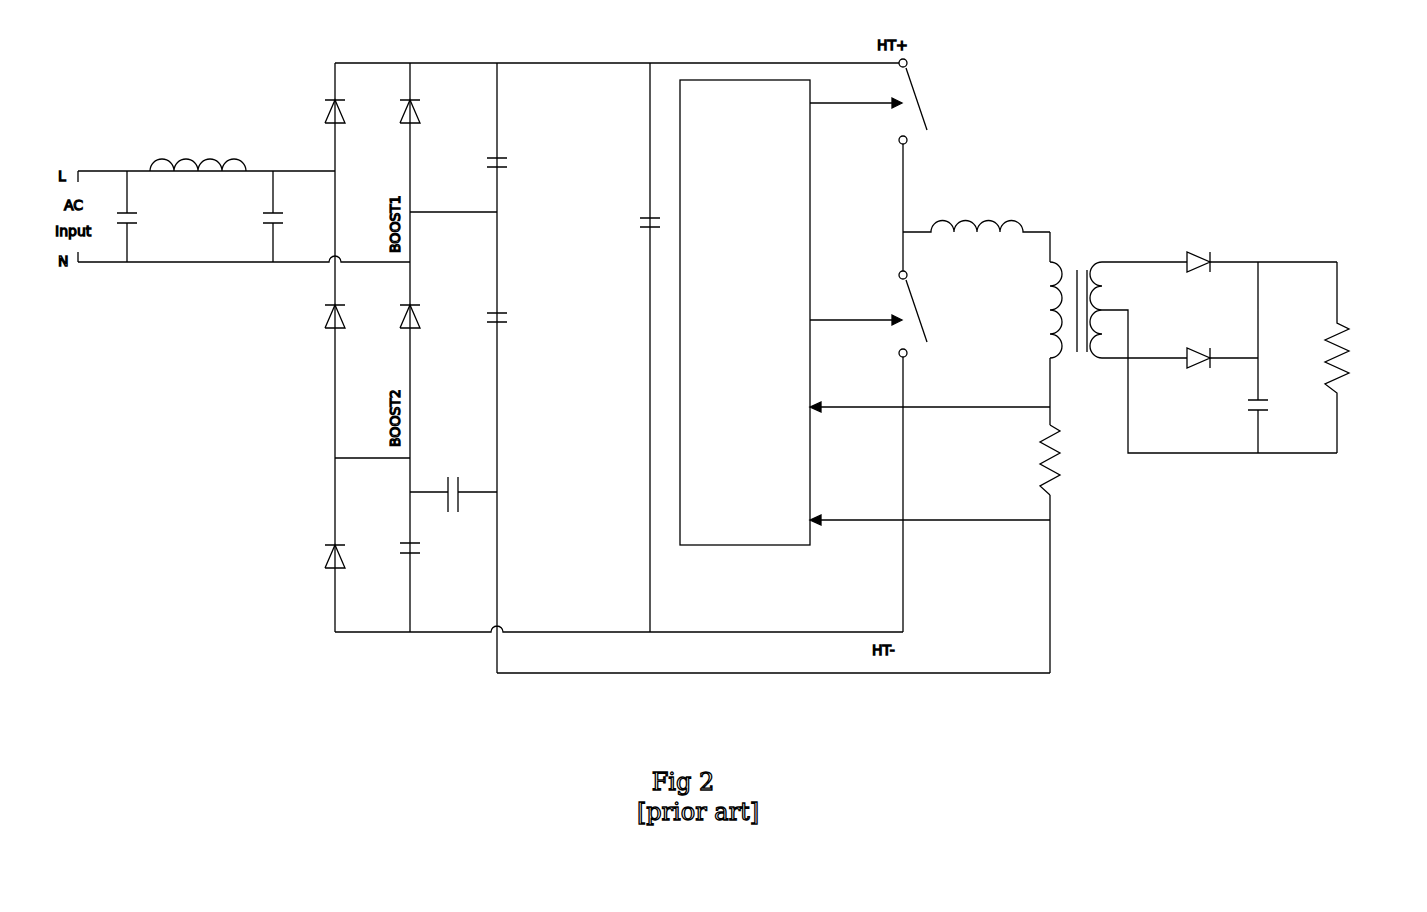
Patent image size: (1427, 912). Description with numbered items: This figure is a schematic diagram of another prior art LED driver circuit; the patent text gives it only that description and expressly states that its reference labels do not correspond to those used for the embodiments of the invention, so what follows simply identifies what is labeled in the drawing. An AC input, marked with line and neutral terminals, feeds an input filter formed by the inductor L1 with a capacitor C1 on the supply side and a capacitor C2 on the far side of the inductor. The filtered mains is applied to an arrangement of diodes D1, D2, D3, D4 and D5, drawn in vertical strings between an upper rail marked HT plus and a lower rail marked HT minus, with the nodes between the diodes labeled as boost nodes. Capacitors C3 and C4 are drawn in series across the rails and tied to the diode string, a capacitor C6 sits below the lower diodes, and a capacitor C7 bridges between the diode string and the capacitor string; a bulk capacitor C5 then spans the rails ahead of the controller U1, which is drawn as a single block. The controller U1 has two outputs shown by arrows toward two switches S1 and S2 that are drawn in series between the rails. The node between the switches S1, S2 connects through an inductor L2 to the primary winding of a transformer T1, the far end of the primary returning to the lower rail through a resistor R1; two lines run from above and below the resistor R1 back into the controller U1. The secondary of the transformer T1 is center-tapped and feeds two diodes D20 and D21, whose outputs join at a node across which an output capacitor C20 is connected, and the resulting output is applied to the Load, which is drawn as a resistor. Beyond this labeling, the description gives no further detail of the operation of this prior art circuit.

The input filter inductor L1 is at (198, 150).
The input filter capacitor C1 is at (142, 216).
The input filter capacitor C2 is at (288, 216).
The rectifier diode D1 is at (348, 111).
The rectifier diode D2 is at (423, 111).
The rectifier diode D3 is at (348, 316).
The rectifier diode D4 is at (423, 316).
The diode D5 is at (348, 556).
The capacitor C3 is at (512, 163).
The capacitor C4 is at (512, 319).
The bulk capacitor C5 is at (631, 223).
The capacitor C6 is at (427, 549).
The capacitor C7 is at (453, 483).
The controller U1 is at (745, 312).
The switch S1 is at (885, 101).
The switch S2 is at (885, 314).
The inductor L2 is at (976, 209).
The transformer T1 is at (1076, 297).
The sense resistor R1 is at (1063, 460).
The output rectifier diode D20 is at (1200, 274).
The output rectifier diode D21 is at (1200, 370).
The output capacitor C20 is at (1279, 405).
The load Load is at (1356, 357).